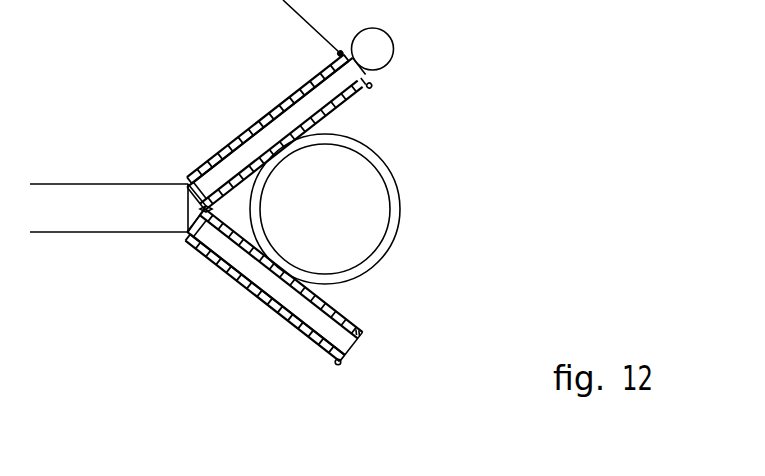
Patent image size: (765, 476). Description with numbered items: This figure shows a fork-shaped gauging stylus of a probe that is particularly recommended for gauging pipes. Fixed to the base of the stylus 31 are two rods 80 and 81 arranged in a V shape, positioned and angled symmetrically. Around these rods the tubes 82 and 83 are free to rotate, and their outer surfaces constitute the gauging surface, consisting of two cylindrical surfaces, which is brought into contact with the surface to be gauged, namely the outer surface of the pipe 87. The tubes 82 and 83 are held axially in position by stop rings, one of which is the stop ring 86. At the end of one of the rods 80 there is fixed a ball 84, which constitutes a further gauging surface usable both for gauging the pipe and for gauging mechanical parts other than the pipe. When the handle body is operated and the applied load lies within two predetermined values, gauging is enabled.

The base of the stylus 31 is at (105, 212).
The rod 80 is at (250, 150).
The rod 81 is at (227, 247).
The tube 82 is at (297, 83).
The tube 83 is at (290, 327).
The ball 84 is at (378, 45).
The stop ring 86 is at (340, 366).
The pipe 87 is at (392, 197).